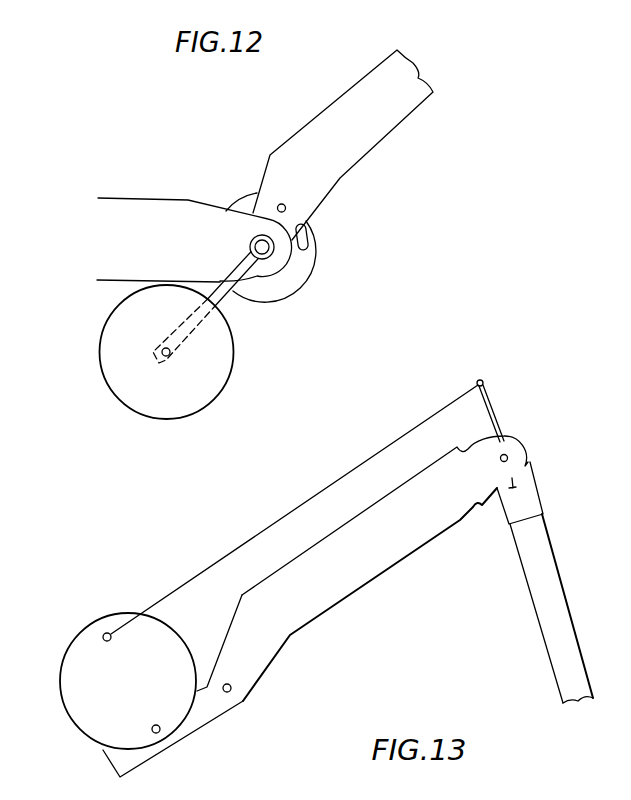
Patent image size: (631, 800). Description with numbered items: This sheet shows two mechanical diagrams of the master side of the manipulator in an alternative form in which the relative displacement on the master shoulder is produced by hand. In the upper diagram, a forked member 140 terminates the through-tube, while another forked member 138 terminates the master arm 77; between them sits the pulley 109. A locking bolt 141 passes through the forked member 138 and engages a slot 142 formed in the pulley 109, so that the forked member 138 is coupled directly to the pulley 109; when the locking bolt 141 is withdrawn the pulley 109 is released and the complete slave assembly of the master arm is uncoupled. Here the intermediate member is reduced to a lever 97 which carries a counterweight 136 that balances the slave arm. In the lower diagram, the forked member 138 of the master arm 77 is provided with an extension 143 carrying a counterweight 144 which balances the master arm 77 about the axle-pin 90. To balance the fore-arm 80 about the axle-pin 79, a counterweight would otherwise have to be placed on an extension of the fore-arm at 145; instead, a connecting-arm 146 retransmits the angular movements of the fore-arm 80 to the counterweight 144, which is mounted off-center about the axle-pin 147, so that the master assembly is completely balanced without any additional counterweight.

In FIG. 12, the forked member 140 is at (150, 216).
In FIG. 12, the locking bolt 141 is at (279, 205).
In FIG. 12, the forked member 138 is at (293, 190).
In FIG. 13, the forked member 138 is at (250, 655).
In FIG. 12, the slot 142 is at (304, 233).
In FIG. 12, the pulley 109 is at (288, 278).
In FIG. 12, the lever 97 is at (218, 280).
In FIG. 12, the counterweight 136 is at (223, 363).
In FIG. 13, the extension location 145 is at (483, 383).
In FIG. 13, the axle-pin 79 is at (507, 457).
In FIG. 13, the fore-arm 80 is at (558, 580).
In FIG. 13, the connecting-arm 146 is at (328, 486).
In FIG. 13, the master arm 77 is at (377, 562).
In FIG. 13, the axle-pin 90 is at (232, 693).
In FIG. 13, the axle-pin 147 is at (160, 731).
In FIG. 13, the extension 143 is at (126, 762).
In FIG. 13, the counterweight 144 is at (68, 705).